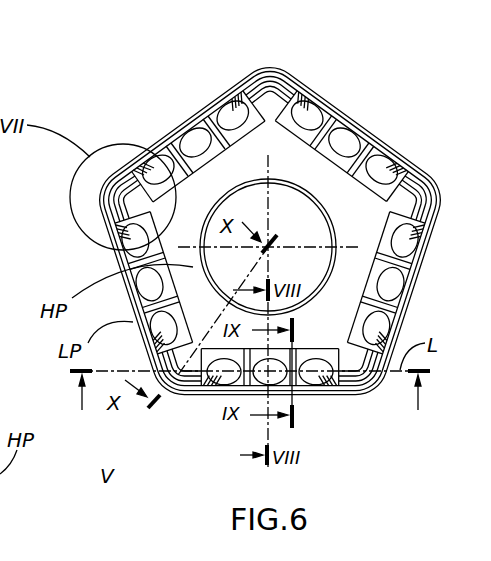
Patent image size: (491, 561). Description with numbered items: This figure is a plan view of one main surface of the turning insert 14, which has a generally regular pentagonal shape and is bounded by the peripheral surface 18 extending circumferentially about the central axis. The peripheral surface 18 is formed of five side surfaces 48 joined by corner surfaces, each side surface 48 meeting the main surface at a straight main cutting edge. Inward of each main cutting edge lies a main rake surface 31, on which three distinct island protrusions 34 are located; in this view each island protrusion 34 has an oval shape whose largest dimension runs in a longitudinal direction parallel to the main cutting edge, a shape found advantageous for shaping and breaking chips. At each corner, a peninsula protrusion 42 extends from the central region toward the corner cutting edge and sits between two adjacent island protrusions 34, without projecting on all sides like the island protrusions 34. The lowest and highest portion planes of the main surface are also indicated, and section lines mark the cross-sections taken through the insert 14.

The turning insert 14 is at (150, 96).
The peripheral surface 18 is at (360, 119).
The main rake surface 31 is at (200, 108).
The island protrusion 34 is at (309, 116).
The peninsula protrusion 42 is at (273, 100).
The side surface 48 is at (422, 292).